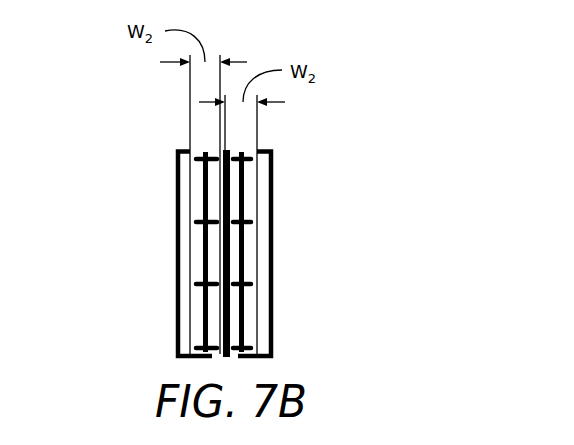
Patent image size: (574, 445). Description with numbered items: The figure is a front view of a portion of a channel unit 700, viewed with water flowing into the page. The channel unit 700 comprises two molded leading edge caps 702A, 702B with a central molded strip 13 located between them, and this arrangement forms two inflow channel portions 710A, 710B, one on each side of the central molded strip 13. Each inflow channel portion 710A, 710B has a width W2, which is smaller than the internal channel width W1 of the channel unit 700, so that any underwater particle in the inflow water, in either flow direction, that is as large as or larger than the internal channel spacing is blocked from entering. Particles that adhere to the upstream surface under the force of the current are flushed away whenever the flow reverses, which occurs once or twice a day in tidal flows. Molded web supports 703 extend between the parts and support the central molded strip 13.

The channel unit 700 is at (138, 107).
The molded leading edge cap 702A is at (177, 320).
The molded leading edge cap 702B is at (272, 320).
The inflow channel portion 710A is at (212, 197).
The inflow channel portion 710B is at (237, 196).
The central molded strip 13 is at (238, 262).
The molded web supports 703 is at (200, 223).